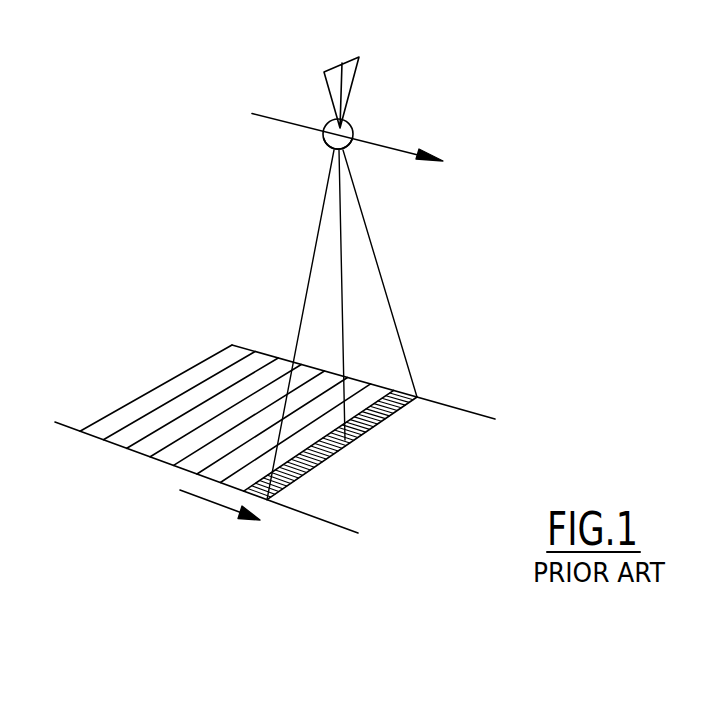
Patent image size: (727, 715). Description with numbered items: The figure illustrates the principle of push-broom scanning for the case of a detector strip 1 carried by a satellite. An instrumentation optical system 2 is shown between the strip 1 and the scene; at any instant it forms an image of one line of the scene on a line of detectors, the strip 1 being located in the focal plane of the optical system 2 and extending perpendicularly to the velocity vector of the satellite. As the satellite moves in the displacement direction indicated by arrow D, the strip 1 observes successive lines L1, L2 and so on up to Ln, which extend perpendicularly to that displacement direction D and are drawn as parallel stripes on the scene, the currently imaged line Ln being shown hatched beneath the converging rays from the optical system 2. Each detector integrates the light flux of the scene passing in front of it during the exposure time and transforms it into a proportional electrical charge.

The detector strip 1 is at (352, 56).
The instrumentation optical system 2 is at (353, 121).
The displacement direction D is at (415, 148).
The first observed line L1 is at (80, 432).
The second observed line L2 is at (98, 440).
The n-th observed line Ln is at (261, 499).